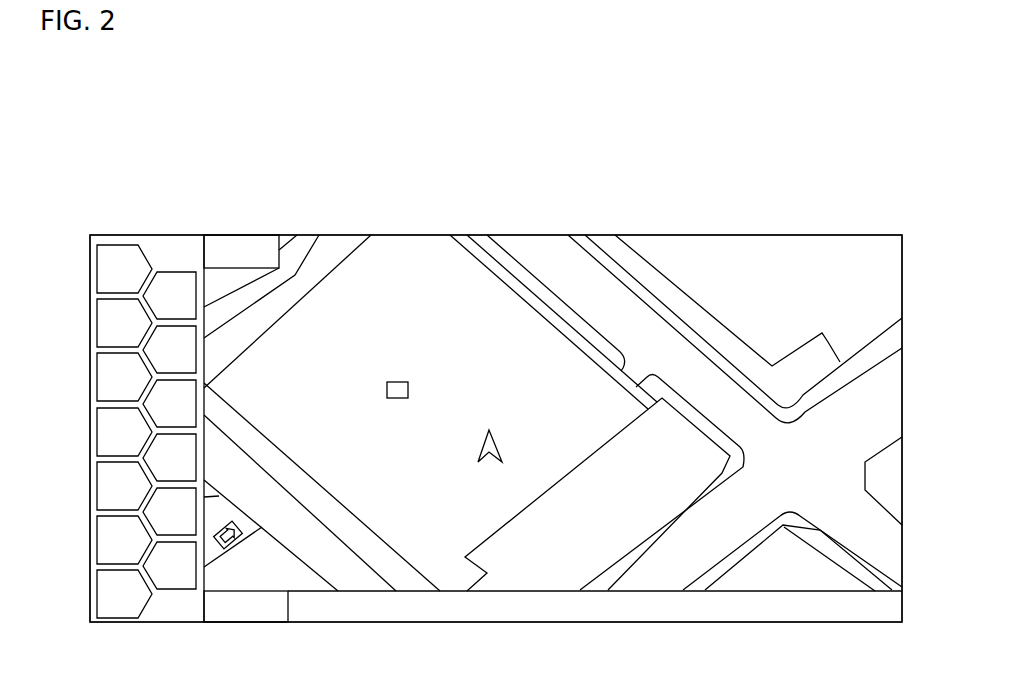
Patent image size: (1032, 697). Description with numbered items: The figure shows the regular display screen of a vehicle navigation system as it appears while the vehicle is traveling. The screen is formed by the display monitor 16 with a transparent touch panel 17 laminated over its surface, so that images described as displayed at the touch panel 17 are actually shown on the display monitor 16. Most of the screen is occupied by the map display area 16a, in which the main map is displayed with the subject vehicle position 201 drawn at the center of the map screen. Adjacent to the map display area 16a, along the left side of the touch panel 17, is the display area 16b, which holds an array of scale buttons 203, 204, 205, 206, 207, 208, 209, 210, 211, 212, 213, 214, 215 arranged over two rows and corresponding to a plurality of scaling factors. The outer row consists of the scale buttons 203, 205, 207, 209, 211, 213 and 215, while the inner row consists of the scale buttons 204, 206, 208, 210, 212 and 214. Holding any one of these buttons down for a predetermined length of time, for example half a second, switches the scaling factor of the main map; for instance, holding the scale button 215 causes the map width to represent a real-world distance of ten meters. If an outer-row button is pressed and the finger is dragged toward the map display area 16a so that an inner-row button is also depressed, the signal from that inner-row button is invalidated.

The display monitor 16 is at (741, 210).
The touch panel 17 is at (496, 428).
The map display area 16a is at (643, 243).
The display area 16b is at (157, 249).
The subject vehicle position 201 is at (489, 430).
The scale button 203 is at (103, 278).
The scale button 204 is at (181, 290).
The scale button 205 is at (103, 336).
The scale button 206 is at (187, 347).
The scale button 207 is at (103, 391).
The scale button 208 is at (187, 403).
The scale button 209 is at (103, 444).
The scale button 210 is at (281, 551).
The scale button 211 is at (103, 497).
The scale button 212 is at (242, 578).
The scale button 213 is at (103, 550).
The scale button 214 is at (168, 583).
The scale button 215 is at (103, 604).